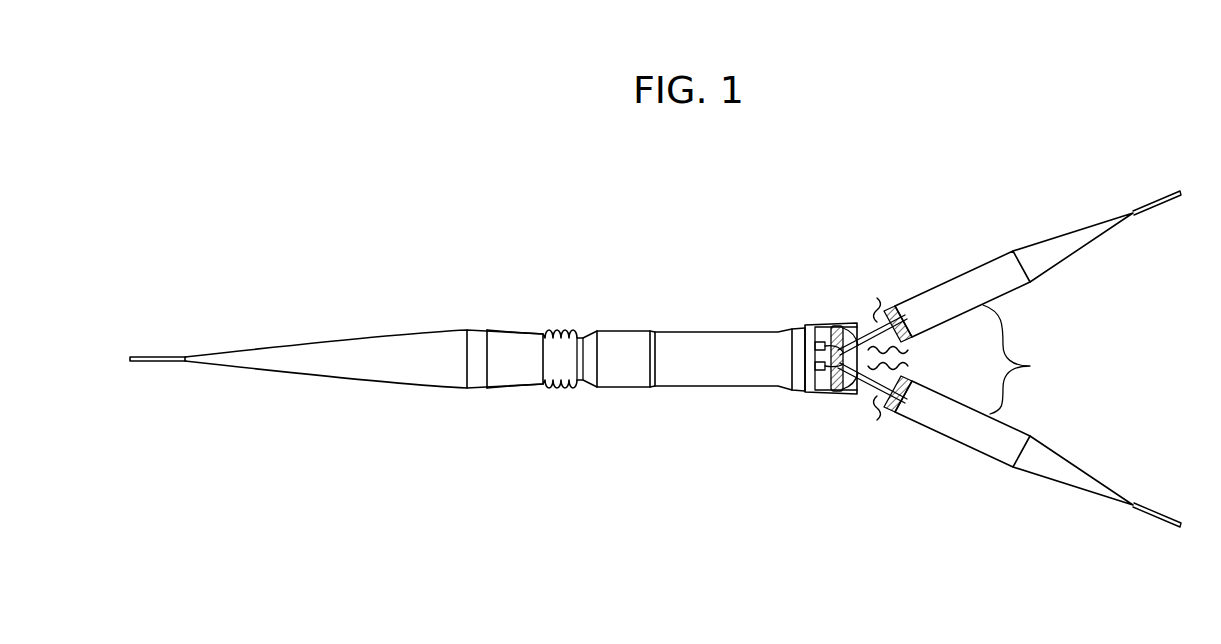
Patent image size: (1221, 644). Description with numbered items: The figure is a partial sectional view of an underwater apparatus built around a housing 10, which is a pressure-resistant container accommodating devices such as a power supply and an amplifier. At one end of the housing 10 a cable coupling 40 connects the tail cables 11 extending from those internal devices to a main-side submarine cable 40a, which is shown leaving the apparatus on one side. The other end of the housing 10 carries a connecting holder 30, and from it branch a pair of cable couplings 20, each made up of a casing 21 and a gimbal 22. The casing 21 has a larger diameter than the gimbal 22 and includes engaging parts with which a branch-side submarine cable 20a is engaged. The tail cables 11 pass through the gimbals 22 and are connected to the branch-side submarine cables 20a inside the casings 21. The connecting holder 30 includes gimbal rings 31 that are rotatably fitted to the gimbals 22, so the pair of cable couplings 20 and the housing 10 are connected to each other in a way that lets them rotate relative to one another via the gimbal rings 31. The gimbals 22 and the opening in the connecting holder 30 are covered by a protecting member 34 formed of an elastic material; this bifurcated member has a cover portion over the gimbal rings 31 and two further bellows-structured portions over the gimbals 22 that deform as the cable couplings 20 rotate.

The housing 10 is at (708, 340).
The tail cables 11 is at (813, 322).
The cable couplings 20 is at (989, 245).
The branch-side submarine cables 20a is at (1155, 200).
The casing 21 is at (1027, 359).
The gimbal 22 is at (881, 306).
The connecting holder 30 is at (833, 308).
The gimbal rings 31 is at (852, 326).
The protecting member 34 is at (884, 417).
The cable coupling 40 is at (407, 340).
The main-side submarine cable 40a is at (148, 355).